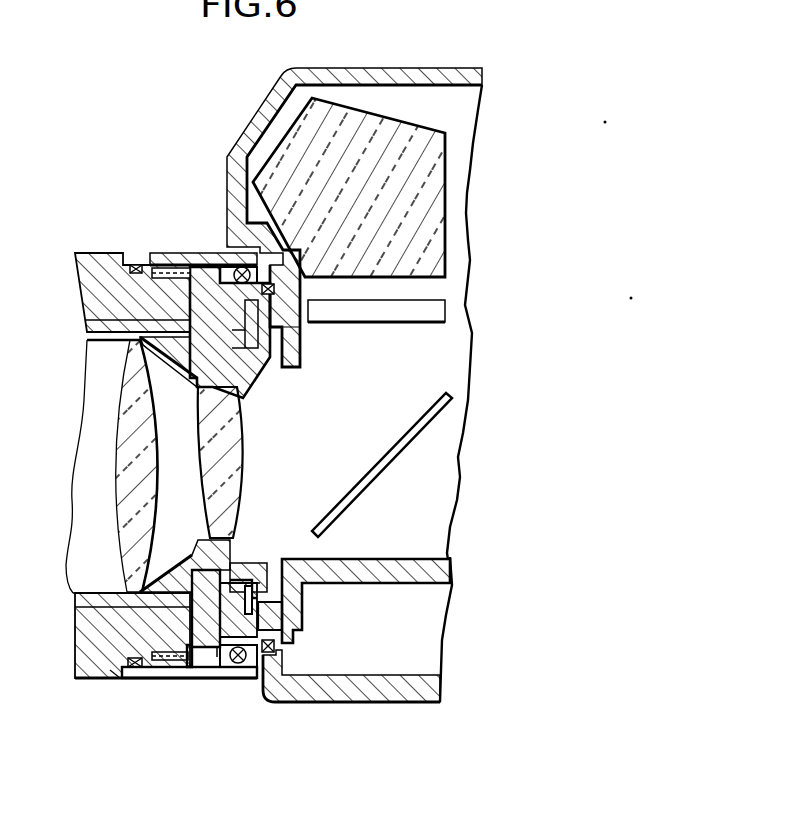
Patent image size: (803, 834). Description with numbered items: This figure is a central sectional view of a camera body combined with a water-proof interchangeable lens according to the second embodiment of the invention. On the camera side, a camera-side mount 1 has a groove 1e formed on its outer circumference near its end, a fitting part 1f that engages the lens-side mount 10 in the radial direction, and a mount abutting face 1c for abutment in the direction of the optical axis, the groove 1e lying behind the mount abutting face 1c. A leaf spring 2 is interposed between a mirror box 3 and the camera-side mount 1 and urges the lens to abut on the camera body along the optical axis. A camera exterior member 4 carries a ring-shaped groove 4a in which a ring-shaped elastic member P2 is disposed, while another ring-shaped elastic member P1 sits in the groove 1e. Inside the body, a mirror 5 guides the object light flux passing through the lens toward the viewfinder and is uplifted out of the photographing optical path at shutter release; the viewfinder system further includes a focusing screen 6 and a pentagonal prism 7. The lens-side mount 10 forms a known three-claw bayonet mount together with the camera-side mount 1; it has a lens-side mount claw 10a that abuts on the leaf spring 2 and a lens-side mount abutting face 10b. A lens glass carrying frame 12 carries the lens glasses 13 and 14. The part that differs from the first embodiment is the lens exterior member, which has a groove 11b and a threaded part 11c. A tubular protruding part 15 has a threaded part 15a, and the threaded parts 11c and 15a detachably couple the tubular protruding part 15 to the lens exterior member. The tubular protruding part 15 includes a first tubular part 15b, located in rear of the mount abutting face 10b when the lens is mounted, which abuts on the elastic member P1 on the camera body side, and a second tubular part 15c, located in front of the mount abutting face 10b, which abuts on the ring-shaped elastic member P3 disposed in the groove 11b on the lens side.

The camera-side mount 1 is at (227, 657).
The mount abutting face 1c is at (168, 268).
The groove 1e is at (259, 672).
The fitting part 1f is at (222, 582).
The leaf spring 2 is at (293, 632).
The mirror box 3 is at (455, 558).
The camera exterior member 4 is at (256, 112).
The ring-shaped groove 4a is at (252, 200).
The mirror 5 is at (400, 445).
The focusing screen 6 is at (440, 317).
The pentagonal prism 7 is at (440, 222).
The lens-side mount 10 is at (200, 660).
The lens-side mount claw 10a is at (273, 583).
The lens-side mount abutting face 10b is at (215, 660).
The groove 11b is at (113, 678).
The threaded part 11c is at (140, 650).
The lens glass carrying frame 12 is at (180, 566).
The lens glass 13 is at (240, 468).
The lens glass 14 is at (128, 388).
The tubular protruding part 15 is at (157, 680).
The threaded part 15a is at (175, 667).
The first tubular part 15b is at (240, 674).
The second tubular part 15c is at (128, 676).
The ring-shaped elastic member P1 is at (257, 262).
The ring-shaped elastic member P2 is at (254, 226).
The elastic member P3 is at (135, 264).